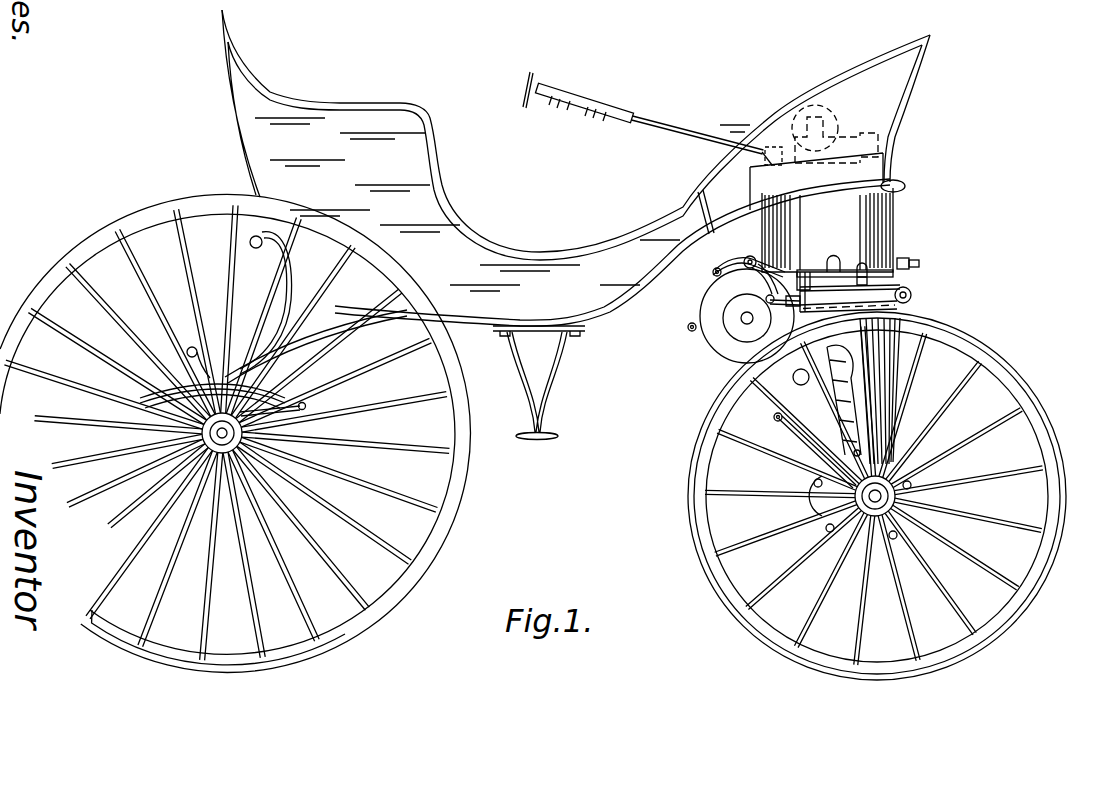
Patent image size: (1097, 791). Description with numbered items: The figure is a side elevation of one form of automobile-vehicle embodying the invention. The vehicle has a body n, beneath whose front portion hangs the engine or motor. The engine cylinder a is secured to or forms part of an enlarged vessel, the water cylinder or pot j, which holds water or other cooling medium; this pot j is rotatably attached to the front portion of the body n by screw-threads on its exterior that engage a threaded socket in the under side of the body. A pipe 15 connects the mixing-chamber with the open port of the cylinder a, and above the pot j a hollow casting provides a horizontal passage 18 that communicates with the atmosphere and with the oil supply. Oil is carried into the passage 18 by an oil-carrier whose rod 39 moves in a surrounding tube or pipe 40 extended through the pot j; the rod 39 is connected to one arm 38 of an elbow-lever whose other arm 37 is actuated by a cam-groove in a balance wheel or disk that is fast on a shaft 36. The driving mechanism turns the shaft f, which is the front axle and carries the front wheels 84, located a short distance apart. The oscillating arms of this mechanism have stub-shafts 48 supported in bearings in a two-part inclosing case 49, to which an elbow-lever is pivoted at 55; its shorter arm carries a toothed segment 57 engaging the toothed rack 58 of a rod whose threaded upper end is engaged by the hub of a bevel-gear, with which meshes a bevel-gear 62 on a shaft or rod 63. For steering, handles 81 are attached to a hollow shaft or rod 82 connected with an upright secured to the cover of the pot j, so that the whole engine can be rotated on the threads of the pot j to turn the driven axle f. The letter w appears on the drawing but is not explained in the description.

The body n is at (508, 252).
The dash w is at (898, 124).
The water cylinder or pot j is at (893, 222).
The shaft or rod 63 is at (524, 90).
The handles 81 is at (594, 97).
The hollow shaft or rod 82 is at (654, 119).
The bevel-gear 62 is at (779, 147).
The horizontal passage 18 is at (852, 140).
The pivot 55 is at (748, 258).
The toothed segment 57 is at (757, 258).
The toothed portion or rack 58 is at (800, 270).
The rod of the oil piston or carrier 39 is at (842, 270).
The surrounding tube or pipe 40 is at (858, 280).
The arm of elbow-lever 38 is at (840, 301).
The inclosing case 49 is at (700, 310).
The shaft 36 is at (747, 320).
The arm of elbow-lever 37 is at (747, 310).
The stub-shafts 48 is at (814, 428).
The pipe 15 is at (898, 372).
The cylinder a is at (890, 400).
The shaft f is at (905, 497).
The front wheels 84 is at (694, 540).